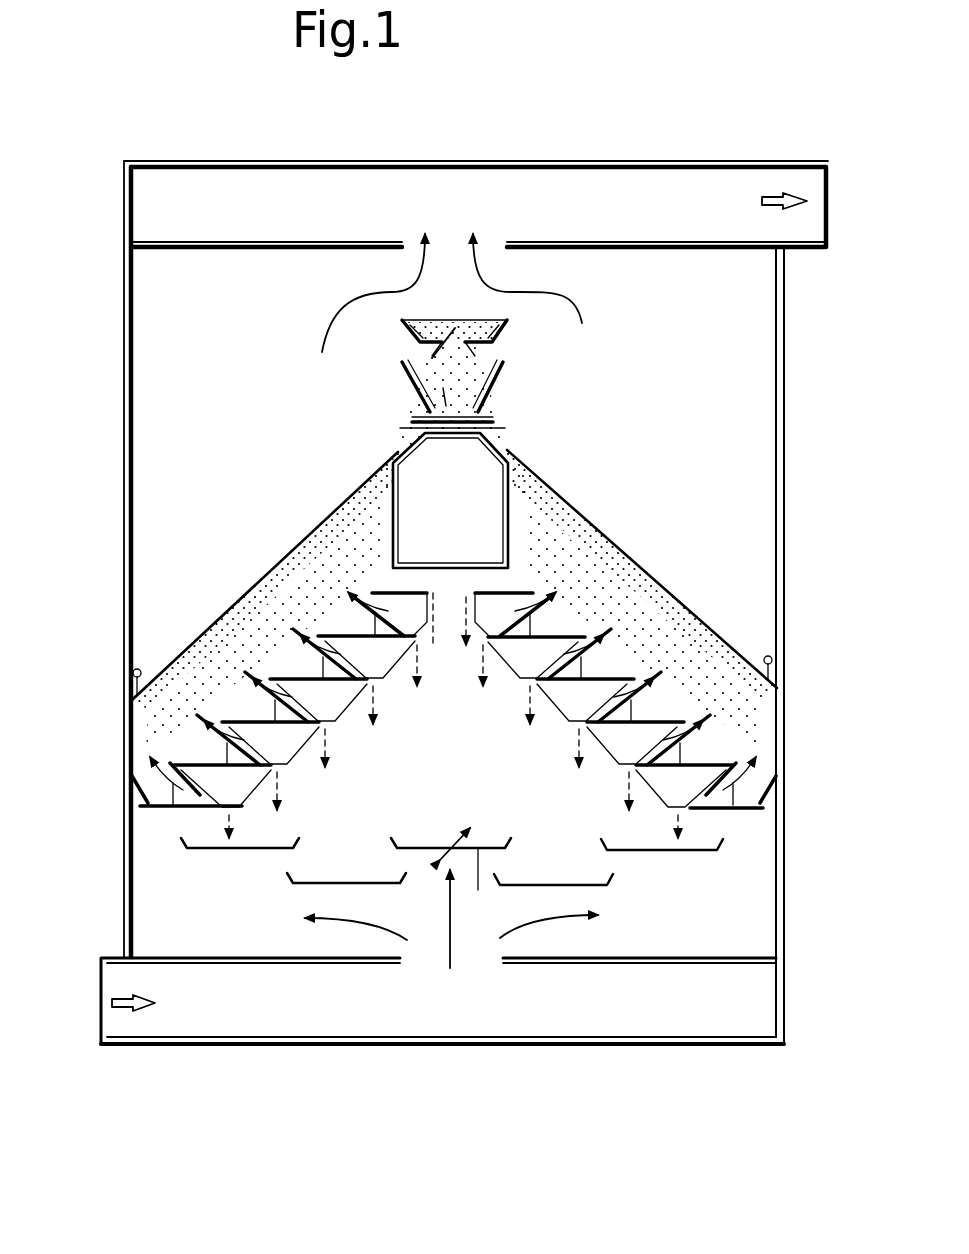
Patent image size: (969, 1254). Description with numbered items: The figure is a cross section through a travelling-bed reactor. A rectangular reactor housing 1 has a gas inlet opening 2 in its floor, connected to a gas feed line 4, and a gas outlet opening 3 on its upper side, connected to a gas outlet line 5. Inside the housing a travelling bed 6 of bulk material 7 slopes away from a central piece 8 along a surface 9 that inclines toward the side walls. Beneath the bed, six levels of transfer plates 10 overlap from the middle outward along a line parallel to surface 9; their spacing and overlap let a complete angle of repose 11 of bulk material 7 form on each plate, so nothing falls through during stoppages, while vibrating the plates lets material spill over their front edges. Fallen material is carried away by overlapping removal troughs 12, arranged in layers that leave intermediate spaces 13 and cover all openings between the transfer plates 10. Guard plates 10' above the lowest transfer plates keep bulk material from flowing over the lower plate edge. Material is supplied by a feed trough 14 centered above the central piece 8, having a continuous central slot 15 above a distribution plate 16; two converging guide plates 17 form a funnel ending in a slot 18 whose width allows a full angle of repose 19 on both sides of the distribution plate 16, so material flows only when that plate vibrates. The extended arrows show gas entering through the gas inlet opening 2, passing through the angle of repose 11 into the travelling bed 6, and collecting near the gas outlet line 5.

The reactor housing 1 is at (777, 587).
The gas inlet opening 2 is at (493, 965).
The gas outlet opening 3 is at (490, 240).
The gas feed line 4 is at (238, 1045).
The gas outlet line 5 is at (594, 160).
The travelling bed 6 is at (563, 538).
The bulk material 7 is at (505, 441).
The central piece 8 is at (458, 523).
The surface 9 is at (652, 577).
The transfer plate 10 is at (453, 748).
The guard plate 10' is at (488, 797).
The angle of repose 11 is at (717, 760).
The removal trough 12 is at (515, 885).
The intermediate space 13 is at (333, 848).
The feed trough 14 is at (506, 328).
The central slot 15 is at (456, 326).
The distribution plate 16 is at (415, 423).
The guide plate 17 is at (405, 371).
The slot 18 is at (442, 390).
The angle of repose 19 is at (486, 413).